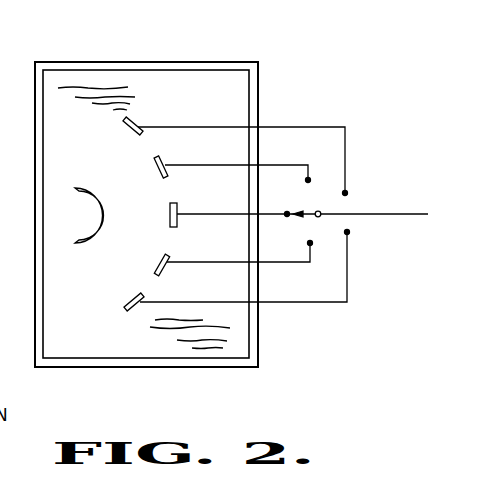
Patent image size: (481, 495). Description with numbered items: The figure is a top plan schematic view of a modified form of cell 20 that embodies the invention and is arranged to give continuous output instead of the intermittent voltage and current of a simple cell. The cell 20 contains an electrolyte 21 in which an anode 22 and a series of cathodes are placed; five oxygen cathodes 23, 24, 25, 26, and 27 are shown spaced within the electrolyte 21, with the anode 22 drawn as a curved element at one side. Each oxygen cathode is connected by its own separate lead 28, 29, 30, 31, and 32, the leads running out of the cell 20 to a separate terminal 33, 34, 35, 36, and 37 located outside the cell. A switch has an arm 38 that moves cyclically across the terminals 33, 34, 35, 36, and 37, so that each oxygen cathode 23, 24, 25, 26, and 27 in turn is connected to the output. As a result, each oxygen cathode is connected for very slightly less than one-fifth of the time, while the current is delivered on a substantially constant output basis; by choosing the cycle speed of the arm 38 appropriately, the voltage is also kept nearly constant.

The cell 20 is at (147, 58).
The electrolyte 21 is at (57, 319).
The anode 22 is at (75, 225).
The oxygen cathode 23 is at (127, 130).
The oxygen cathode 24 is at (157, 165).
The oxygen cathode 25 is at (169, 213).
The oxygen cathode 26 is at (156, 262).
The oxygen cathode 27 is at (131, 299).
The lead 28 is at (302, 125).
The lead 29 is at (229, 165).
The lead 30 is at (229, 214).
The lead 31 is at (224, 262).
The lead 32 is at (300, 303).
The terminal 33 is at (349, 194).
The terminal 34 is at (311, 179).
The terminal 35 is at (287, 216).
The terminal 36 is at (310, 244).
The terminal 37 is at (348, 234).
The arm 38 is at (318, 215).